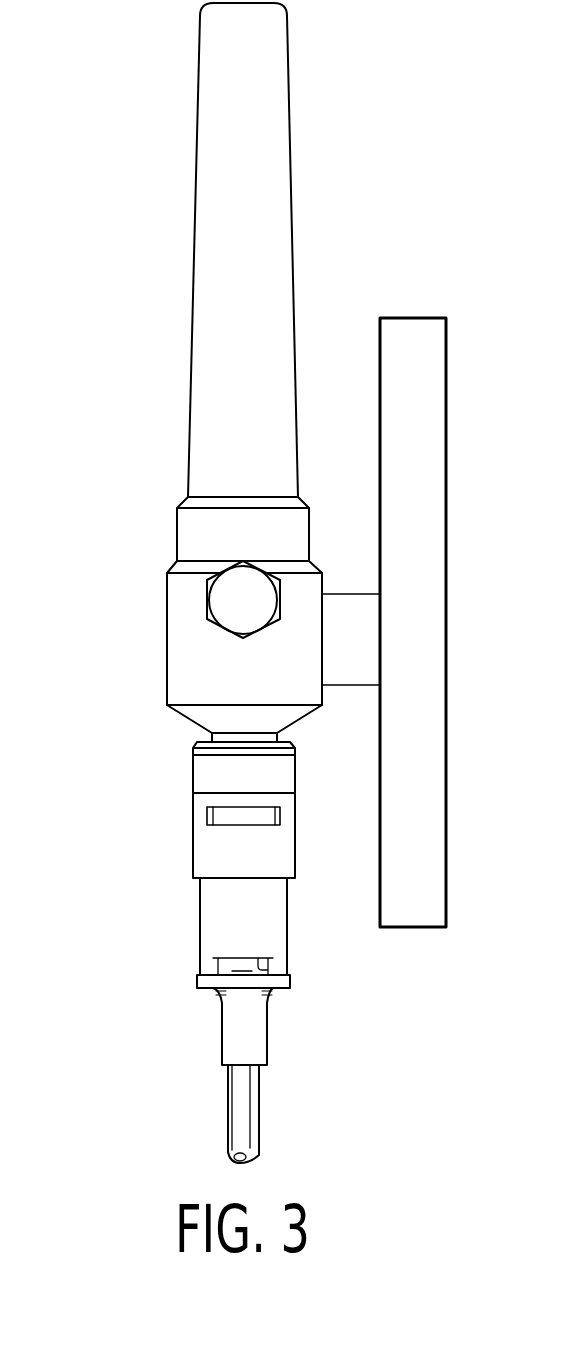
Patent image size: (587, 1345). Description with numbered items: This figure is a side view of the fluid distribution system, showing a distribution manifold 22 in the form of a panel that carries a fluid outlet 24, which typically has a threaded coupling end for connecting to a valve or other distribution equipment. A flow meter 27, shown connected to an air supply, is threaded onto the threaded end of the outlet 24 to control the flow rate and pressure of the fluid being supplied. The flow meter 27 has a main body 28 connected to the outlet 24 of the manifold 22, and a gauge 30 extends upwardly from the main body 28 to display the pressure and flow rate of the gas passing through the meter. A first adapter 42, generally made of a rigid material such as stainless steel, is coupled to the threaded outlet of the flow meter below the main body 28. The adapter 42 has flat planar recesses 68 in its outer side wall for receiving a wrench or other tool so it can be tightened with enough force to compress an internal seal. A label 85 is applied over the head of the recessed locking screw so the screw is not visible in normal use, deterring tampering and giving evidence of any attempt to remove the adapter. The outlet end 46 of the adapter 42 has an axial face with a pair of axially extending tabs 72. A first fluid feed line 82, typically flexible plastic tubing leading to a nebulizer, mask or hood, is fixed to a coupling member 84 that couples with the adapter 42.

The distribution manifold 22 is at (407, 318).
The fluid outlet 24 is at (345, 594).
The flow meter 27 is at (177, 509).
The main body 28 is at (166, 632).
The gauge 30 is at (193, 303).
The first adapter 42 is at (192, 862).
The outlet end 46 is at (268, 964).
The flat planar recess 68 is at (222, 814).
The axially extending tab 72 is at (200, 952).
The first fluid feed line 82 is at (226, 1103).
The coupling member 84 is at (221, 1033).
The label 85 is at (213, 800).